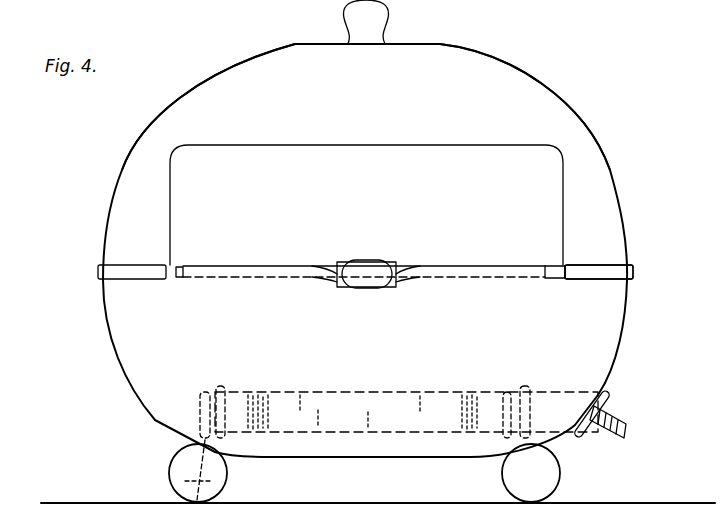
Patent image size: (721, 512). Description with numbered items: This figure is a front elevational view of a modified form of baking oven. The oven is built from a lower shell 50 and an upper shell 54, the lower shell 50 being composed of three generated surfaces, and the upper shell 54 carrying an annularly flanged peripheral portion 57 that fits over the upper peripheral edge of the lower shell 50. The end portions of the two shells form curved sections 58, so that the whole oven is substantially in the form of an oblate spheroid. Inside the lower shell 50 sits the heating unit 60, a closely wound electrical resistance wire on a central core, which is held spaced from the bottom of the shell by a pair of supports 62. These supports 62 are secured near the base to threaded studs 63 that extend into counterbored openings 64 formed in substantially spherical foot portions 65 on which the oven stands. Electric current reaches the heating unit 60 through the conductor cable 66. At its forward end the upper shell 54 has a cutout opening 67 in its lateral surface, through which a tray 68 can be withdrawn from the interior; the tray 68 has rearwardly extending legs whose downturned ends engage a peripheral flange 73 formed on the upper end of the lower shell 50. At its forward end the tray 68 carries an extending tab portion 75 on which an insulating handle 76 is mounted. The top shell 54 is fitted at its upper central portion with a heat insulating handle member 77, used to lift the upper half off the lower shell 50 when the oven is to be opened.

The lower shell 50 is at (606, 335).
The upper shell 54 is at (555, 105).
The annularly flanged peripheral portion 57 is at (634, 272).
The curved sections 58 is at (103, 291).
The heating unit 60 is at (343, 400).
The supports 62 is at (218, 388).
The threaded studs 63 is at (196, 453).
The counterbored openings 64 is at (190, 481).
The foot portions 65 is at (226, 478).
The conductor cable 66 is at (617, 417).
The cutout opening 67 is at (436, 153).
The tray 68 is at (507, 272).
The peripheral flange 73 is at (175, 272).
The tab portion 75 is at (397, 264).
The insulating handle 76 is at (366, 264).
The heat insulating handle member 77 is at (348, 13).